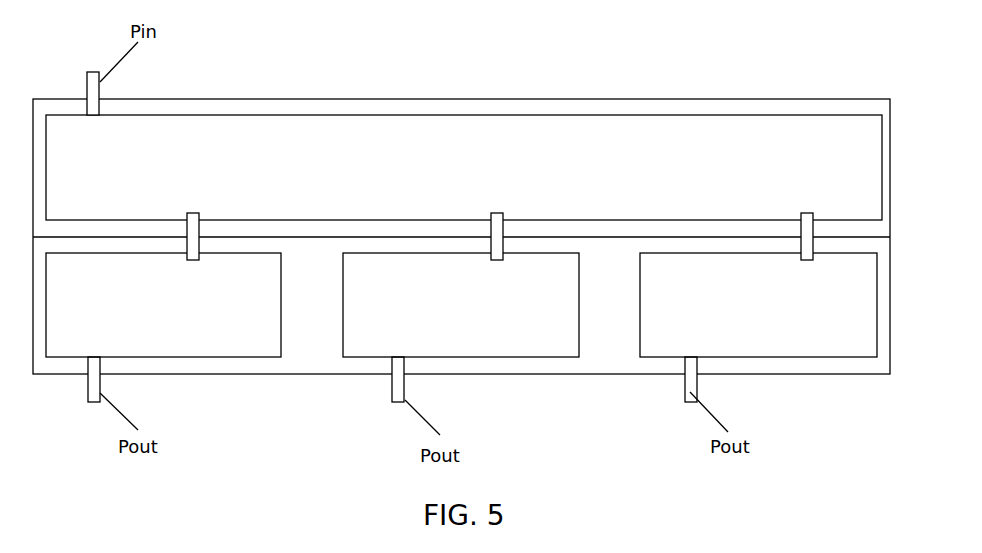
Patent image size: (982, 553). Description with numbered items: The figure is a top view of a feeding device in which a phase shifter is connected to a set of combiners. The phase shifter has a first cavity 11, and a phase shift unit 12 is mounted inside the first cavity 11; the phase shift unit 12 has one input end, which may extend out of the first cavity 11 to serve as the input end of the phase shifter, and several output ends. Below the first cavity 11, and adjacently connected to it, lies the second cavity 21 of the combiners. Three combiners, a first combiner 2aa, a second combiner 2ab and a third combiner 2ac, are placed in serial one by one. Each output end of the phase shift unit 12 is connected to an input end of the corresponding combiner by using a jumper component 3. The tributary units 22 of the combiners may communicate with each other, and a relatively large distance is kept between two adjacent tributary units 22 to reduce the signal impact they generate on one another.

The first cavity 11 is at (293, 103).
The phase shift unit 12 is at (475, 127).
The second cavity 21 is at (203, 363).
The tributary unit 22 is at (461, 359).
The first combiner 2aa is at (264, 335).
The second combiner 2ab is at (425, 328).
The third combiner 2ac is at (758, 328).
The jumper component 3 is at (503, 257).